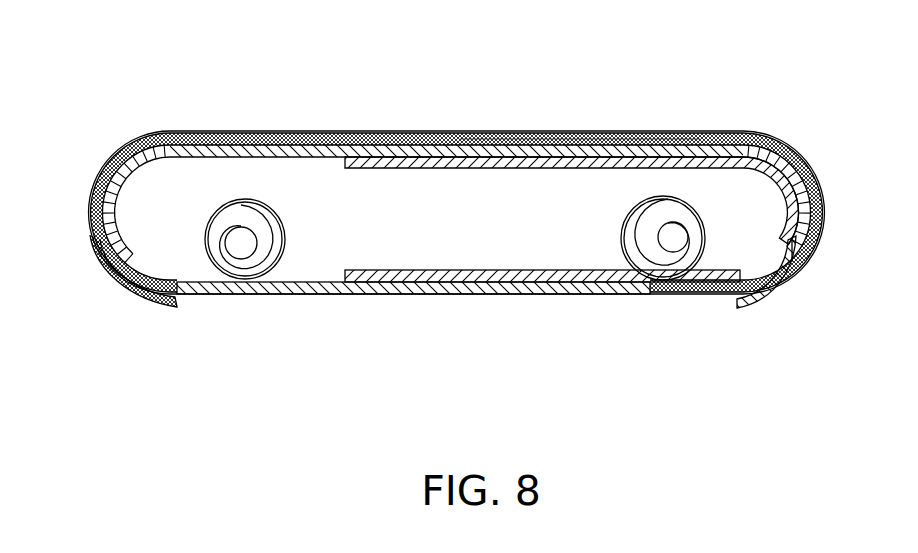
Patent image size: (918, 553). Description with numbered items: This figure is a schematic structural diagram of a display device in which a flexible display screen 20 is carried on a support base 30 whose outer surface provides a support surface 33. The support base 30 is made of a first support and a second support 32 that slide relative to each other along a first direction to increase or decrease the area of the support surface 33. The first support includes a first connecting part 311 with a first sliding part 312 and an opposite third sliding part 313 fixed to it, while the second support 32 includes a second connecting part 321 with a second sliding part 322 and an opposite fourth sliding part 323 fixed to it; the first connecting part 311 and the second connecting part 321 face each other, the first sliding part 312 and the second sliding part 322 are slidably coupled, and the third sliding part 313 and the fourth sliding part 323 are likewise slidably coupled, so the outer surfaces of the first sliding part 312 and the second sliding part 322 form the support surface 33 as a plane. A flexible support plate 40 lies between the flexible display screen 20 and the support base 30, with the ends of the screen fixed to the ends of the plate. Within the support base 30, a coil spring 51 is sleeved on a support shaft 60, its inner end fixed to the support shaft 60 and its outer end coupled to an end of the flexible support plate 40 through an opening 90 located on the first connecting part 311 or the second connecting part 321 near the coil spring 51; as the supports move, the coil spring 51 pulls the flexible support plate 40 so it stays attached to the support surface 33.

The support base 30 is at (143, 110).
The flexible display screen 20 is at (241, 132).
The flexible support plate 40 is at (291, 131).
The support surface 33 is at (362, 143).
The first sliding part 312 is at (421, 157).
The second sliding part 322 is at (513, 143).
The third sliding part 313 is at (368, 294).
The fourth sliding part 323 is at (490, 296).
The first connecting part 311 is at (100, 268).
The second connecting part 321 is at (795, 288).
The second support 32 is at (712, 297).
The opening 90 is at (268, 296).
The coil spring 51 is at (212, 222).
The support shaft 60 is at (241, 245).